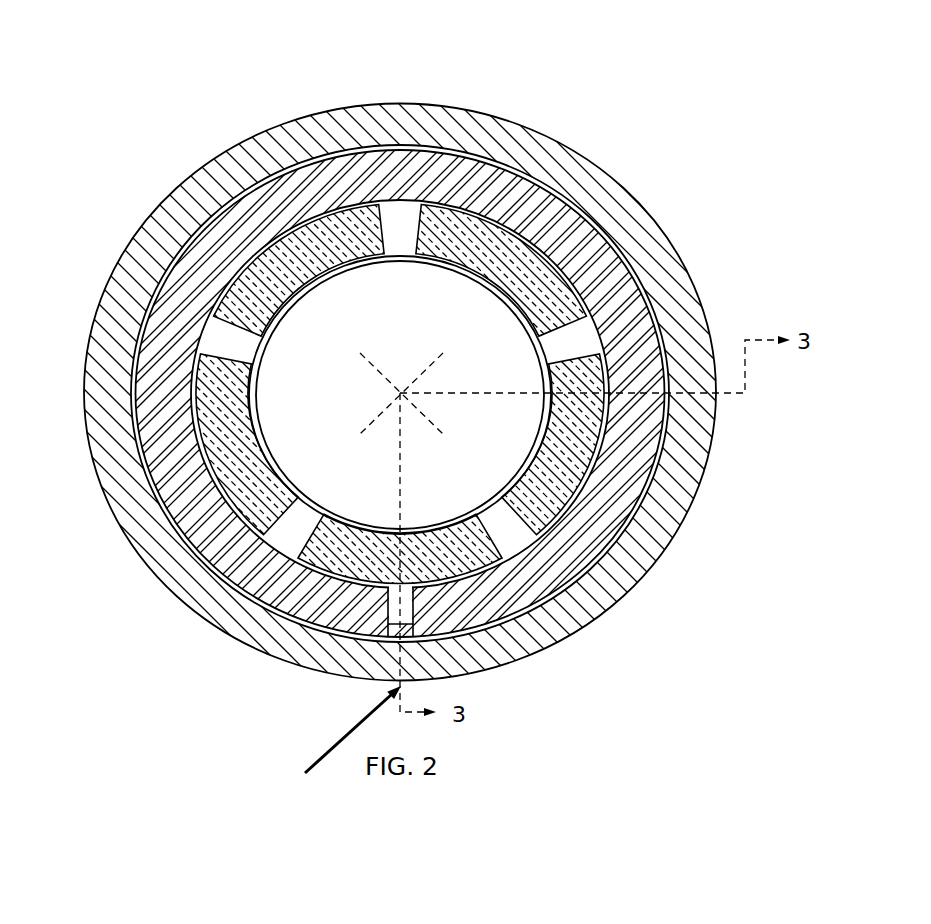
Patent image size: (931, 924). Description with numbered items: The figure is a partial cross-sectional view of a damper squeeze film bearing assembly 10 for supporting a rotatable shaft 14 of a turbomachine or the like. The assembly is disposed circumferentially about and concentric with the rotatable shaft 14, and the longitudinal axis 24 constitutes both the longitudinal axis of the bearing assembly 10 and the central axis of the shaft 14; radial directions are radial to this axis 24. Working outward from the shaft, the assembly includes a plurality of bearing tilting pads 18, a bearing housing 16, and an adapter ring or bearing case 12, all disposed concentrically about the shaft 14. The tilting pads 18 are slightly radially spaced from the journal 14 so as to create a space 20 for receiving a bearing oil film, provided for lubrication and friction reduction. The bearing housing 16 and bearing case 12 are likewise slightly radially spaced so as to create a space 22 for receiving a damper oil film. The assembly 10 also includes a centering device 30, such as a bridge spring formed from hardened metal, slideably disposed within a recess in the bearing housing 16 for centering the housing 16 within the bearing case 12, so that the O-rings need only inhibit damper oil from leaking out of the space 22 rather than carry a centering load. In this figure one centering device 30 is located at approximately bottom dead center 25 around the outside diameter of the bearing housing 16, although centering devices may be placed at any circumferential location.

The damper squeeze film bearing assembly 10 is at (109, 48).
The bearing case 12 is at (110, 423).
The rotatable shaft 14 is at (458, 313).
The bearing housing 16 is at (628, 447).
The bearing tilting pads 18 is at (572, 465).
The space for bearing oil film 20 is at (551, 392).
The space for damper oil film 22 is at (338, 641).
The longitudinal axis 24 is at (401, 393).
The bottom dead center 25 is at (329, 743).
The centering device 30 is at (396, 642).